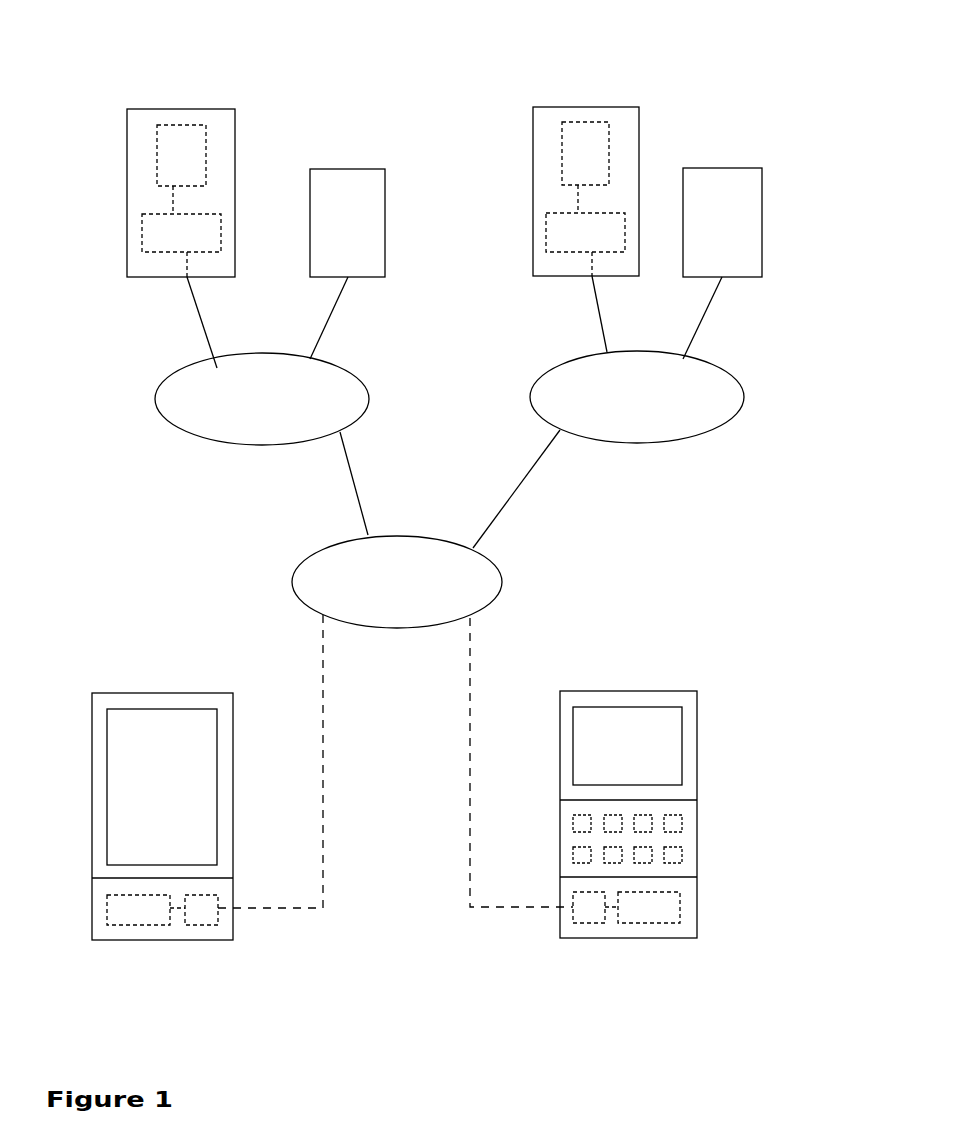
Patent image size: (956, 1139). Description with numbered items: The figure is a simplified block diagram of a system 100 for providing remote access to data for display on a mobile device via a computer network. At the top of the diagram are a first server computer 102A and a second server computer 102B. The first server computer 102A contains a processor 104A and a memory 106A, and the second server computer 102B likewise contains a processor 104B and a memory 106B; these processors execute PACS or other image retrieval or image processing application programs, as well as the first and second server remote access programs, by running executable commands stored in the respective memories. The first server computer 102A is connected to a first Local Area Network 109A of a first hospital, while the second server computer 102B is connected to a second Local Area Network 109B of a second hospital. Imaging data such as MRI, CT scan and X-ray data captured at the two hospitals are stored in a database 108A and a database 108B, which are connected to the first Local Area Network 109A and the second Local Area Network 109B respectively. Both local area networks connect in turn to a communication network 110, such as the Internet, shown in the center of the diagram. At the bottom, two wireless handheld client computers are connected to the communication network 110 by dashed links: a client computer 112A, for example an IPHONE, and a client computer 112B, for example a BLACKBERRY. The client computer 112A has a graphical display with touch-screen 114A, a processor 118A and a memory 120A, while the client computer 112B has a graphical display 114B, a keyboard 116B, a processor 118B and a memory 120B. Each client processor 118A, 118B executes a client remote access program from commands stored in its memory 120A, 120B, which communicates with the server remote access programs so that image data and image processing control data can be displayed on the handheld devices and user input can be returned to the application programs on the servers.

The system 100 is at (763, 75).
The first server computer 102A is at (172, 109).
The processor 104A is at (173, 231).
The memory 106A is at (187, 140).
The database 108A is at (338, 217).
The first Local Area Network (LAN) 109A is at (307, 385).
The second server computer 102B is at (592, 107).
The processor 104B is at (592, 230).
The memory 106B is at (592, 137).
The database 108B is at (728, 213).
The second Local Area Network (LAN) 109B is at (699, 382).
The communication network 110 is at (468, 583).
The client computer 112A is at (92, 730).
The graphical display with touch-screen 114A is at (155, 793).
The processor 118A is at (202, 915).
The memory 120A is at (138, 915).
The client computer 112B is at (682, 698).
The graphical display 114B is at (635, 745).
The keyboard 116B is at (664, 837).
The processor 118B is at (590, 913).
The memory 120B is at (650, 913).